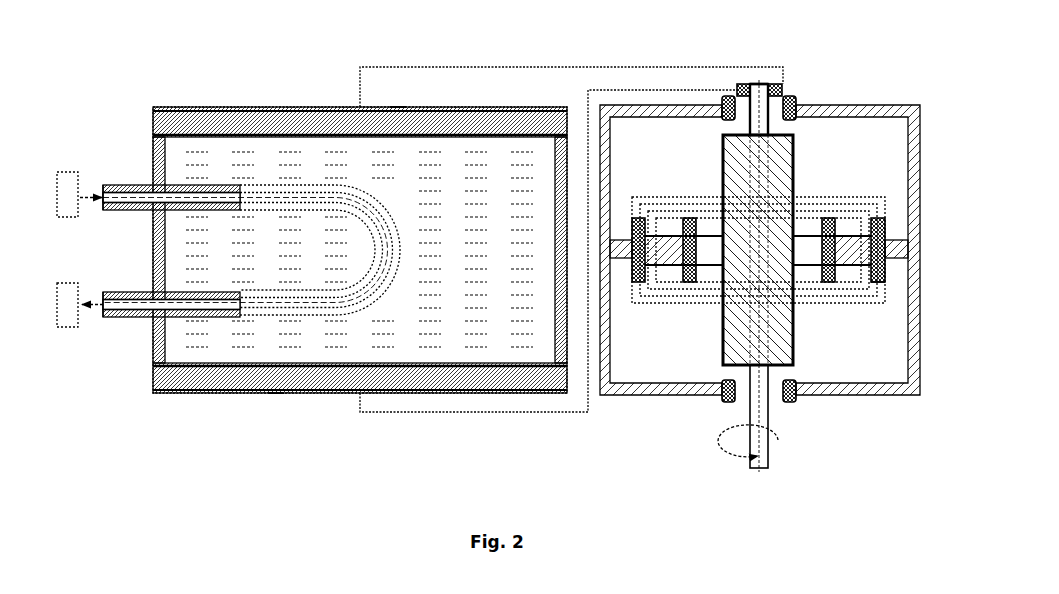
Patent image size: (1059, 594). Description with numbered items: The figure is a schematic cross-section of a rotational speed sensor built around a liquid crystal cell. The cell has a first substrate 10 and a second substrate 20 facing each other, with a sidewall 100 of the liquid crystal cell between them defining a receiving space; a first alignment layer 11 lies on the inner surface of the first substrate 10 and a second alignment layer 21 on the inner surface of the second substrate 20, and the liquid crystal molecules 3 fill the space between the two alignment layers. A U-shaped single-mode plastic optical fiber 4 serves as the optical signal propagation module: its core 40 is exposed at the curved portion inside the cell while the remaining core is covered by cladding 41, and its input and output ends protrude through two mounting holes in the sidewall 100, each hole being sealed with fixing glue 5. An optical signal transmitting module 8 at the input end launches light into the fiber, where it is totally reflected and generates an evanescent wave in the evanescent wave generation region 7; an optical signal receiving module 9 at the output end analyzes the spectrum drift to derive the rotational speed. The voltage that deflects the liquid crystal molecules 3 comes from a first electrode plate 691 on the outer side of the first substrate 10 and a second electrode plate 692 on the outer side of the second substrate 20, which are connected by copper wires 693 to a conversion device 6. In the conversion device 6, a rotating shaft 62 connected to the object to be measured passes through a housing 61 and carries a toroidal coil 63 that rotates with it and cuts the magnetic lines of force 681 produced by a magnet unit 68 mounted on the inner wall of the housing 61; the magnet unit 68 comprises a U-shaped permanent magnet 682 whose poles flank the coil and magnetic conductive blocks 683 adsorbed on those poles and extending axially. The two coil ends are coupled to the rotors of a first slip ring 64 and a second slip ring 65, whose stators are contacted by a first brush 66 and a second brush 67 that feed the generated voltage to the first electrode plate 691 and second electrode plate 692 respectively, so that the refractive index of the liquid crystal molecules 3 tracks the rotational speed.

The liquid crystal molecules 3 is at (325, 152).
The single-mode plastic optical fiber 4 is at (228, 276).
The fixing glue 5 is at (153, 290).
The conversion device 6 is at (789, 244).
The evanescent wave generation region 7 is at (367, 313).
The optical signal transmitting module 8 is at (79, 194).
The optical signal receiving module 9 is at (80, 305).
The first substrate 10 is at (208, 122).
The first alignment layer 11 is at (290, 135).
The second substrate 20 is at (232, 378).
The second alignment layer 21 is at (185, 367).
The core 40 is at (103, 197).
The cladding 41 is at (133, 190).
The housing 61 is at (920, 175).
The rotating shaft 62 is at (777, 343).
The toroidal coil 63 is at (793, 365).
The first slip ring 64 is at (769, 85).
The second slip ring 65 is at (752, 85).
The first brush 66 is at (783, 98).
The second brush 67 is at (738, 90).
The magnet unit 68 is at (794, 185).
The sidewall of the liquid crystal cell 100 is at (157, 335).
The magnetic lines of force 681 is at (827, 200).
The U-shaped permanent magnet 682 is at (867, 252).
The magnetic conductive blocks 683 is at (912, 301).
The first electrode plate 691 is at (398, 107).
The second electrode plate 692 is at (275, 393).
The copper wires 693 is at (490, 67).